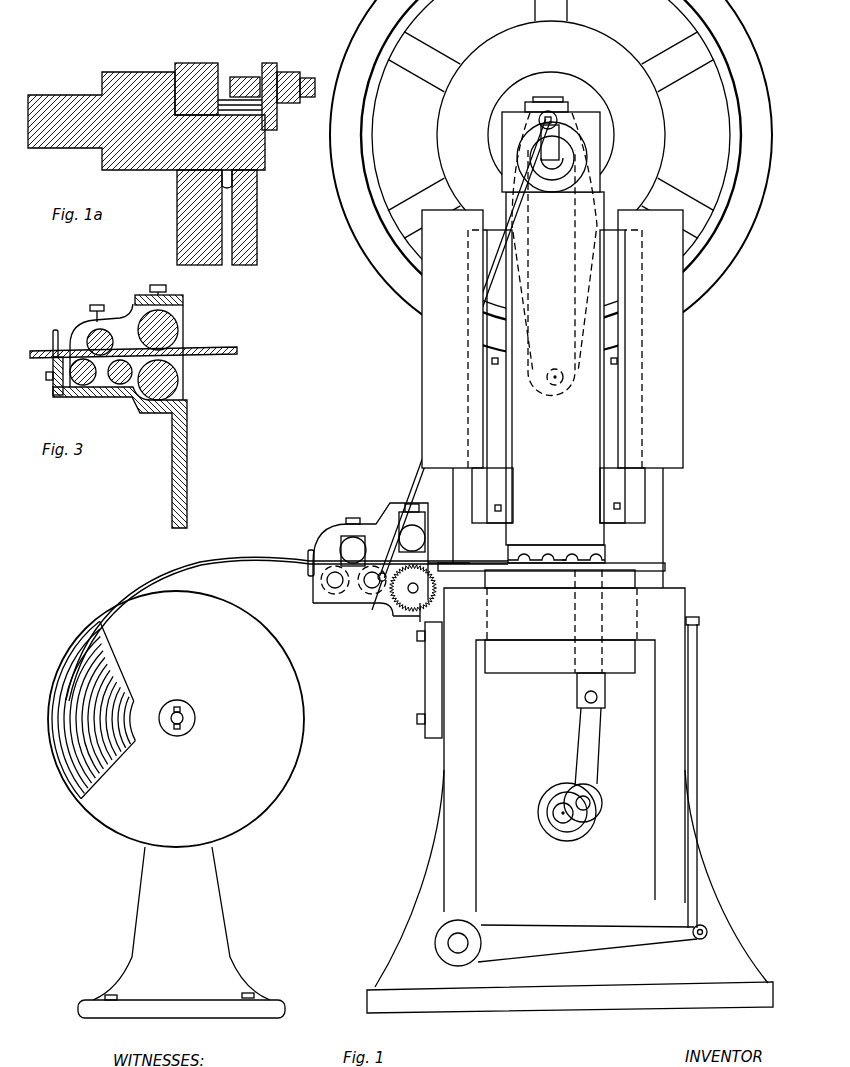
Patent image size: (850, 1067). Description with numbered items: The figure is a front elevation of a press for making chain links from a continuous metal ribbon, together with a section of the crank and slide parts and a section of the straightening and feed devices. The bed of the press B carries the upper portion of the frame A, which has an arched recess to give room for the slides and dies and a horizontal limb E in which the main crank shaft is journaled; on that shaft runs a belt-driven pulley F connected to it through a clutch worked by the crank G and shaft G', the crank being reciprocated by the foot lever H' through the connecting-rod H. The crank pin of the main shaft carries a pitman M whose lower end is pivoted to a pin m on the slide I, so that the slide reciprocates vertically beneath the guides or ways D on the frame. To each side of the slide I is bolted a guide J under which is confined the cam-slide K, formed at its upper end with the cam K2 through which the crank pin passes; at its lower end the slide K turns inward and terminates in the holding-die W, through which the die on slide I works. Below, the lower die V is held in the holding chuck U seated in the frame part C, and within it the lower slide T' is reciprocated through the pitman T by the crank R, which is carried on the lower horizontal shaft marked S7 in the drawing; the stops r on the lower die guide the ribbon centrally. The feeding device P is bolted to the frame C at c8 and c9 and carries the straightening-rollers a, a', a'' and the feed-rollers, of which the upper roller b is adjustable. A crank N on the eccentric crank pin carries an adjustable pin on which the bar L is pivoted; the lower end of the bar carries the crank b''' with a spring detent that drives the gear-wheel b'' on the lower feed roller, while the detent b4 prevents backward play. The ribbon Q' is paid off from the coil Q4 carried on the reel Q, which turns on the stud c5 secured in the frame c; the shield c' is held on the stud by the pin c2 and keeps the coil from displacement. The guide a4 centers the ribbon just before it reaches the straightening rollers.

In FIG. 1, the upper portion of the frame A is at (551, 528).
In FIG. 1, the bed of the press B is at (570, 957).
In FIG. 1, the part of frame C is at (571, 787).
In FIG. 1, the guides or ways D is at (552, 339).
In FIG. 1, the horizontal limb E is at (551, 117).
In FIG. 1, the pulley F is at (551, 178).
In FIG. 1, the crank G is at (592, 943).
In FIG. 1, the shaft G' is at (458, 943).
In FIG. 1, the connecting-rod H is at (700, 776).
In FIG. 1, the lever H' is at (701, 613).
In FIG. 1, the slide I is at (558, 495).
In FIG. 1, the guide J is at (555, 376).
In FIG. 1a, the cam-slide K is at (250, 233).
In FIG. 1, the cam-slide K is at (555, 368).
In FIG. 1, the cam K2 is at (577, 157).
In FIG. 1a, the bar L is at (298, 72).
In FIG. 1, the bar L is at (464, 350).
In FIG. 1a, the pitman M is at (198, 63).
In FIG. 1, the pitman M is at (546, 112).
In FIG. 1, the pin m is at (558, 382).
In FIG. 1a, the crank N is at (268, 63).
In FIG. 1, the crank N is at (556, 126).
In FIG. 3, the feeding device P is at (120, 406).
In FIG. 1, the feeding device P is at (370, 566).
In FIG. 1, the reel Q is at (178, 845).
In FIG. 3, the ribbon Q' is at (144, 342).
In FIG. 1, the ribbon Q' is at (287, 629).
In FIG. 1, the ribbon-coil Q4 is at (176, 719).
In FIG. 1, the crank R is at (547, 811).
In FIG. 1, the shaft S7 is at (558, 829).
In FIG. 1, the pitman T is at (583, 765).
In FIG. 1, the lower slide T' is at (591, 688).
In FIG. 1, the holding chuck or block U is at (561, 621).
In FIG. 1, the lower die V is at (540, 566).
In FIG. 1, the holding-die W is at (562, 557).
In FIG. 1, the stops r is at (570, 564).
In FIG. 3, the straightening-roller a is at (92, 342).
In FIG. 1, the straightening-roller a is at (344, 542).
In FIG. 3, the straightening-roller a' is at (56, 395).
In FIG. 1, the straightening-roller a' is at (331, 595).
In FIG. 1, the straightening-roller a'' is at (368, 585).
In FIG. 3, the guide a4 is at (52, 334).
In FIG. 1, the guide a4 is at (296, 570).
In FIG. 1, the feed-roller b is at (423, 533).
In FIG. 1, the detent b4 is at (449, 572).
In FIG. 1, the gear-wheel b'' is at (413, 588).
In FIG. 1, the crank b''' is at (363, 604).
In FIG. 1, the frame c is at (181, 932).
In FIG. 1, the shield c' is at (190, 799).
In FIG. 1, the pin c2 is at (186, 715).
In FIG. 1, the stud c5 is at (194, 721).
In FIG. 1, the bolt c8 is at (402, 719).
In FIG. 1, the bolt c9 is at (411, 670).